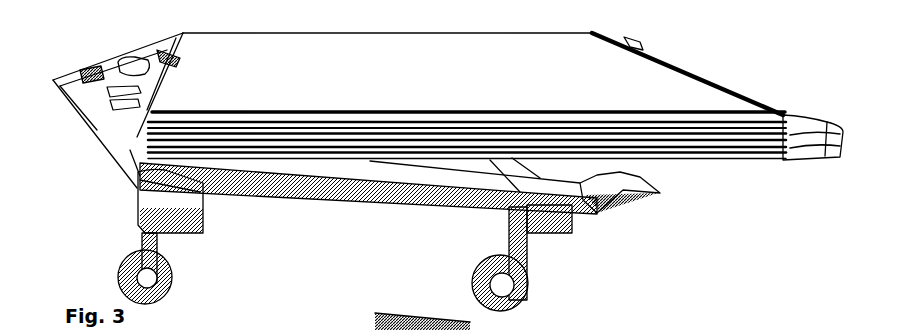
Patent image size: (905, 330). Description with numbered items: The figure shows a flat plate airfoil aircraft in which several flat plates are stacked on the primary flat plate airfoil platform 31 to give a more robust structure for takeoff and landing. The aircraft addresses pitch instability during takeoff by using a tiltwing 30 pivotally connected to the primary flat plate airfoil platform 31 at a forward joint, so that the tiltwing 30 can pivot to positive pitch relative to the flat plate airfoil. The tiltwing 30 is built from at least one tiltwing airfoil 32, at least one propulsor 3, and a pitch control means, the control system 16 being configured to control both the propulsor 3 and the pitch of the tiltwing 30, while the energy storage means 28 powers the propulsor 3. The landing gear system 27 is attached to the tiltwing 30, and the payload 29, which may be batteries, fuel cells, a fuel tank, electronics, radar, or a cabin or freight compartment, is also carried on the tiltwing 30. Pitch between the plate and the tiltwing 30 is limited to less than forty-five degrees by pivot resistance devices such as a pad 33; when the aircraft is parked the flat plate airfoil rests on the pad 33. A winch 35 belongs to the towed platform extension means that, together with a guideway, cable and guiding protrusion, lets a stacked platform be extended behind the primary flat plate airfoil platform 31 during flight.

The propulsor 3 is at (140, 210).
The control system 16 is at (110, 87).
The landing gear system 27 is at (155, 240).
The energy storage means 28 is at (112, 105).
The payload 29 is at (130, 57).
The tiltwing 30 is at (370, 212).
The primary flat plate airfoil platform 31 is at (183, 33).
The tiltwing airfoil 32 is at (133, 183).
The pad 33 is at (493, 170).
The winch 35 is at (90, 72).